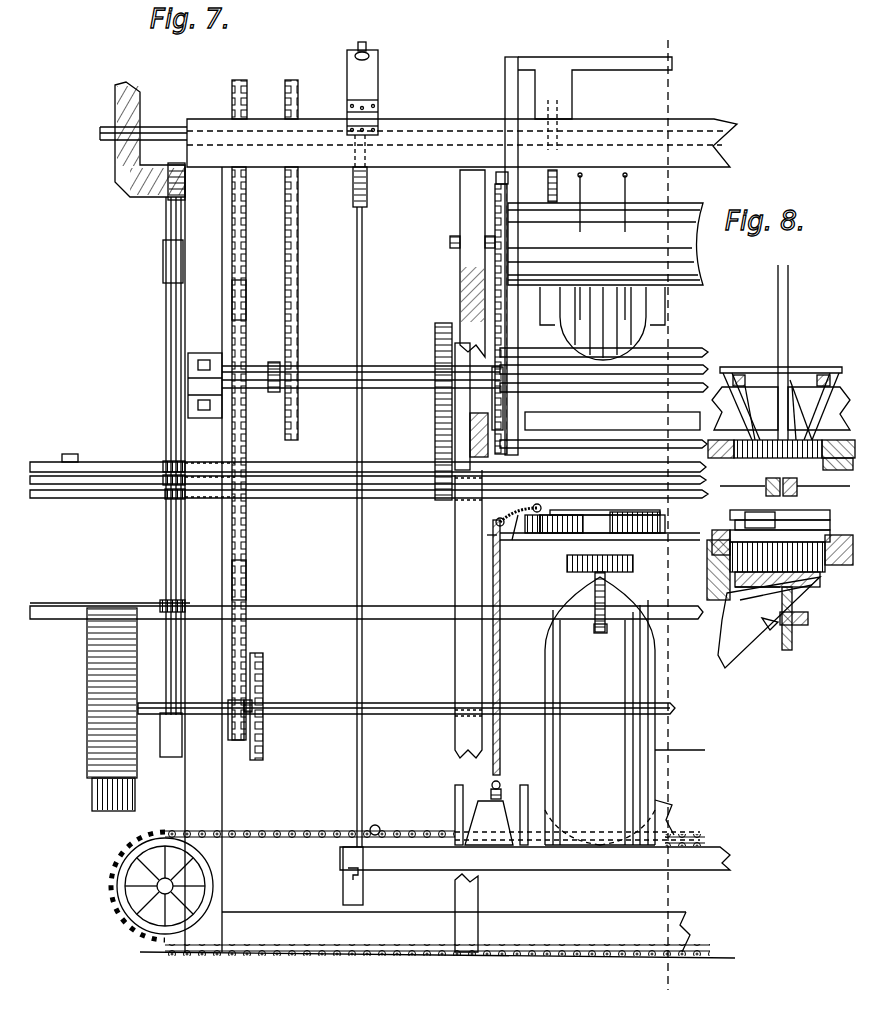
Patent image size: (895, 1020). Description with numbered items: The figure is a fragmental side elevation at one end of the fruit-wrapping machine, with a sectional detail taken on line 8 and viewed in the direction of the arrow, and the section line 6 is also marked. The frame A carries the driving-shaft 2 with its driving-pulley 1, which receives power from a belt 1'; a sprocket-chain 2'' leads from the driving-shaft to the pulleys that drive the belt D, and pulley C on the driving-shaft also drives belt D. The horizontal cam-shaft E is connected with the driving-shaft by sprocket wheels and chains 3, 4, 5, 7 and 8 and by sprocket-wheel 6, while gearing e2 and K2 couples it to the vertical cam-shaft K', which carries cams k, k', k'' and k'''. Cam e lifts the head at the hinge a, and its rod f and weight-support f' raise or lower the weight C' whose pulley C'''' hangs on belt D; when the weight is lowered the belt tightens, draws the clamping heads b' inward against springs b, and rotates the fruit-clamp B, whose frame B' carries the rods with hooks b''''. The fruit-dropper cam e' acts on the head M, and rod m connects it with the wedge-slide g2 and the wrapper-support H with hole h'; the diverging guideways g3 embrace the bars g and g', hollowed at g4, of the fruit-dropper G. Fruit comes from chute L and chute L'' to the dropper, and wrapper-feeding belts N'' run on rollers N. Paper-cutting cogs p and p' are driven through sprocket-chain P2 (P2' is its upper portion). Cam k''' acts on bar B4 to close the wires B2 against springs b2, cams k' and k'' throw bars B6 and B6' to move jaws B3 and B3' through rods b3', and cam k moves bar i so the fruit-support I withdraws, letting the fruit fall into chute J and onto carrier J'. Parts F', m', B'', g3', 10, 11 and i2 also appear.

In FIG. 7, the frame A is at (461, 535).
In FIG. 7, the gearing e2 is at (115, 100).
In FIG. 7, the cam-shaft E is at (160, 127).
In FIG. 7, the gearing K2 is at (167, 190).
In FIG. 7, the vertical cam-shaft K' is at (179, 477).
In FIG. 7, the cam k' is at (162, 507).
In FIG. 7, the chain upper end P2' is at (255, 92).
In FIG. 7, the sprocket-chain P2 is at (253, 453).
In FIG. 7, the sprocket wheel and chain 8 is at (616, 639).
In FIG. 7, the sprocket wheel and chain 7 is at (298, 300).
In FIG. 7, the sprocket wheel and chain 5 is at (247, 306).
In FIG. 7, the sprocket wheel and chain 4 is at (247, 580).
In FIG. 7, the sprocket wheel and chain 3 is at (238, 742).
In FIG. 7, the housing F' is at (378, 88).
In FIG. 7, the hinge a is at (378, 120).
In FIG. 7, the cam e is at (372, 171).
In FIG. 7, the rod f is at (367, 527).
In FIG. 7, the rod m is at (498, 256).
In FIG. 8, the rod m is at (794, 352).
In FIG. 7, the fruit-dropper head M is at (572, 97).
In FIG. 7, the sprocket-wheel 6 is at (652, 55).
In FIG. 7, the sprocket-wheel and chain 10 is at (496, 180).
In FIG. 7, the sprocket-wheel and chain 11 is at (495, 205).
In FIG. 7, the block m' is at (495, 263).
In FIG. 7, the fruit-dropper cam e' is at (541, 186).
In FIG. 7, the spring b is at (602, 246).
In FIG. 8, the spring b is at (780, 592).
In FIG. 7, the chute L is at (605, 244).
In FIG. 7, the chute L'' is at (602, 323).
In FIG. 7, the wrapper-feeding belt N'' is at (604, 333).
In FIG. 7, the wrapper-feeding roller N is at (611, 341).
In FIG. 7, the cog p' is at (431, 404).
In FIG. 7, the cog p is at (452, 406).
In FIG. 7, the fruit-supporting bar g is at (612, 427).
In FIG. 8, the fruit-supporting bar g is at (731, 351).
In FIG. 7, the wrapper-support H is at (603, 436).
In FIG. 8, the wrapper-support H is at (781, 411).
In FIG. 7, the movable bar B4 is at (52, 462).
In FIG. 7, the movable bar B6' is at (368, 461).
In FIG. 7, the movable bar B6 is at (369, 508).
In FIG. 7, the cam k''' is at (199, 458).
In FIG. 7, the cam k'' is at (199, 484).
In FIG. 7, the fruit-rest bar i is at (292, 606).
In FIG. 8, the fruit-rest bar i is at (808, 618).
In FIG. 7, the driving-shaft 2 is at (406, 697).
In FIG. 7, the driving-pulley 1 is at (98, 693).
In FIG. 7, the belt 1' is at (96, 791).
In FIG. 7, the cam k is at (166, 597).
In FIG. 7, the sprocket-chain 2'' is at (272, 696).
In FIG. 7, the driving-pulley C is at (494, 642).
In FIG. 7, the belt D is at (500, 584).
In FIG. 7, the pulley C'''' is at (513, 782).
In FIG. 7, the weight C' is at (489, 823).
In FIG. 7, the fruit-clamp B is at (598, 522).
In FIG. 8, the fruit-clamp B is at (768, 531).
In FIG. 7, the hook portion b'''' is at (517, 537).
In FIG. 7, the fruit-clamping head b' is at (535, 537).
In FIG. 8, the fruit-clamping head b' is at (760, 510).
In FIG. 7, the gear B'' is at (561, 537).
In FIG. 7, the frame B' is at (635, 536).
In FIG. 7, the fruit-support I is at (633, 566).
In FIG. 8, the fruit-support I is at (740, 585).
In FIG. 7, the chute J is at (625, 711).
In FIG. 8, the chute J is at (769, 622).
In FIG. 7, the carrier J' is at (535, 827).
In FIG. 7, the weight-support f' is at (334, 876).
In FIG. 8, the fruit-dropping device G is at (822, 367).
In FIG. 8, the fruit-supporting bar g' is at (838, 347).
In FIG. 8, the hollow g4 is at (750, 370).
In FIG. 8, the wedge-slide g2 is at (800, 367).
In FIG. 8, the hole h' is at (797, 412).
In FIG. 8, the wrapper-clamping member B2 is at (781, 462).
In FIG. 8, the wrapper-clamping jaw B3 is at (784, 477).
In FIG. 8, the wrapper-clamping jaw B3' is at (761, 480).
In FIG. 8, the rod g3' is at (739, 474).
In FIG. 8, the guideway g3 is at (823, 473).
In FIG. 8, the rod b3' is at (776, 507).
In FIG. 8, the spring b2 is at (787, 512).
In FIG. 8, the pin i2 is at (768, 630).